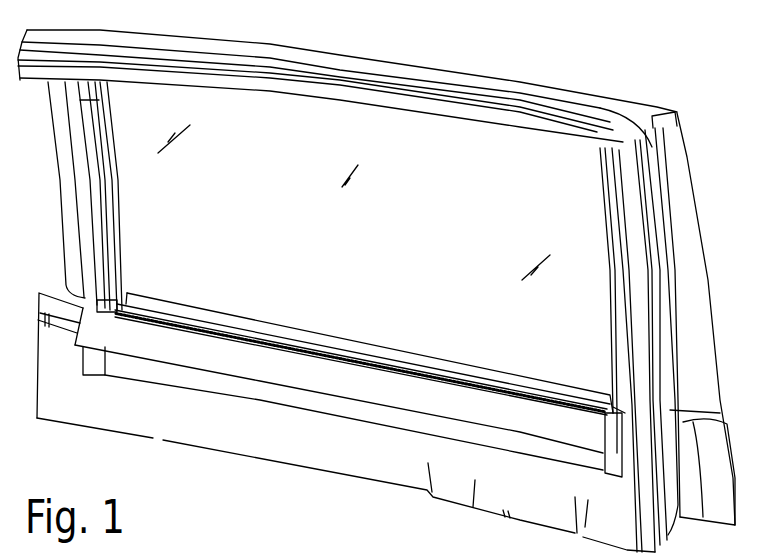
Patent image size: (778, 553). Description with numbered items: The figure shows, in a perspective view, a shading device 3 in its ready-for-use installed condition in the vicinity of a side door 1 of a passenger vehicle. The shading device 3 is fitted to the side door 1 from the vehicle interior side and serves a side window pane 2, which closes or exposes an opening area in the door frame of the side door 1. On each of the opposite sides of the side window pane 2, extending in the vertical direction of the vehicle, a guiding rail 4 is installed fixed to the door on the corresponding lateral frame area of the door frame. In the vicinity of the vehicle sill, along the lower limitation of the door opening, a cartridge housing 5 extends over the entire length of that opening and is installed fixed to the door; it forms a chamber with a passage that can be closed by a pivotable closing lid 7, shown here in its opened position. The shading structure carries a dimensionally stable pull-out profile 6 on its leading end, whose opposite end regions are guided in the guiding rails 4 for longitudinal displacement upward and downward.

The side door 1 is at (669, 82).
The side window pane 2 is at (352, 242).
The shading device 3 is at (145, 246).
The guiding rails 4 is at (97, 203).
The cartridge housing 5 is at (318, 407).
The pull-out profile 6 is at (402, 328).
The closing lid 7 is at (221, 358).